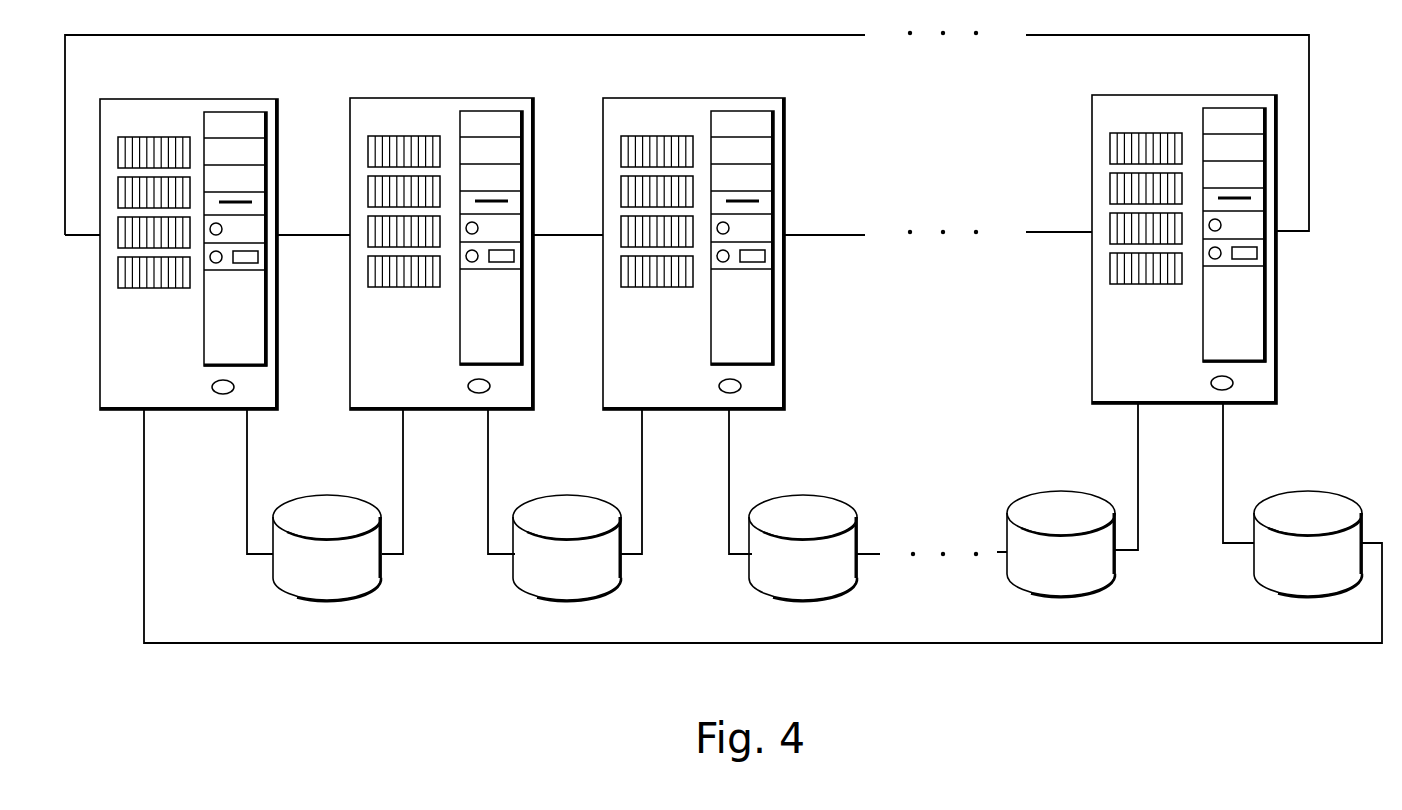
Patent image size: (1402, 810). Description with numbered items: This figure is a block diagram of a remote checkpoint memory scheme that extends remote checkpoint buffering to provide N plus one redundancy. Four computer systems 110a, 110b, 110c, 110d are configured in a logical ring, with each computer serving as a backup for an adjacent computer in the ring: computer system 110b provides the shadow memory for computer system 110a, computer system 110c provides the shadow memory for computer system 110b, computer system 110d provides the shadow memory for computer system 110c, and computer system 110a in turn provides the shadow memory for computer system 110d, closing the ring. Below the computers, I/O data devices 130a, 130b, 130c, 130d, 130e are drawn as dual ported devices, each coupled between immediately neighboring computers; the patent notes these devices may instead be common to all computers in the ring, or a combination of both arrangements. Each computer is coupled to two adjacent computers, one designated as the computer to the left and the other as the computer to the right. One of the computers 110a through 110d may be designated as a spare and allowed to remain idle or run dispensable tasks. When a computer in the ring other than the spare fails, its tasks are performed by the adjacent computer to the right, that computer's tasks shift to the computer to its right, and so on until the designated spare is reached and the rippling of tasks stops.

The computer system 110a is at (278, 112).
The computer system 110b is at (528, 112).
The computer system 110c is at (779, 112).
The computer system 110d is at (1278, 101).
The I/O data device 130a is at (382, 573).
The I/O data device 130b is at (619, 573).
The I/O data device 130c is at (855, 566).
The I/O data device 130d is at (1115, 558).
The I/O data device 130e is at (1254, 565).